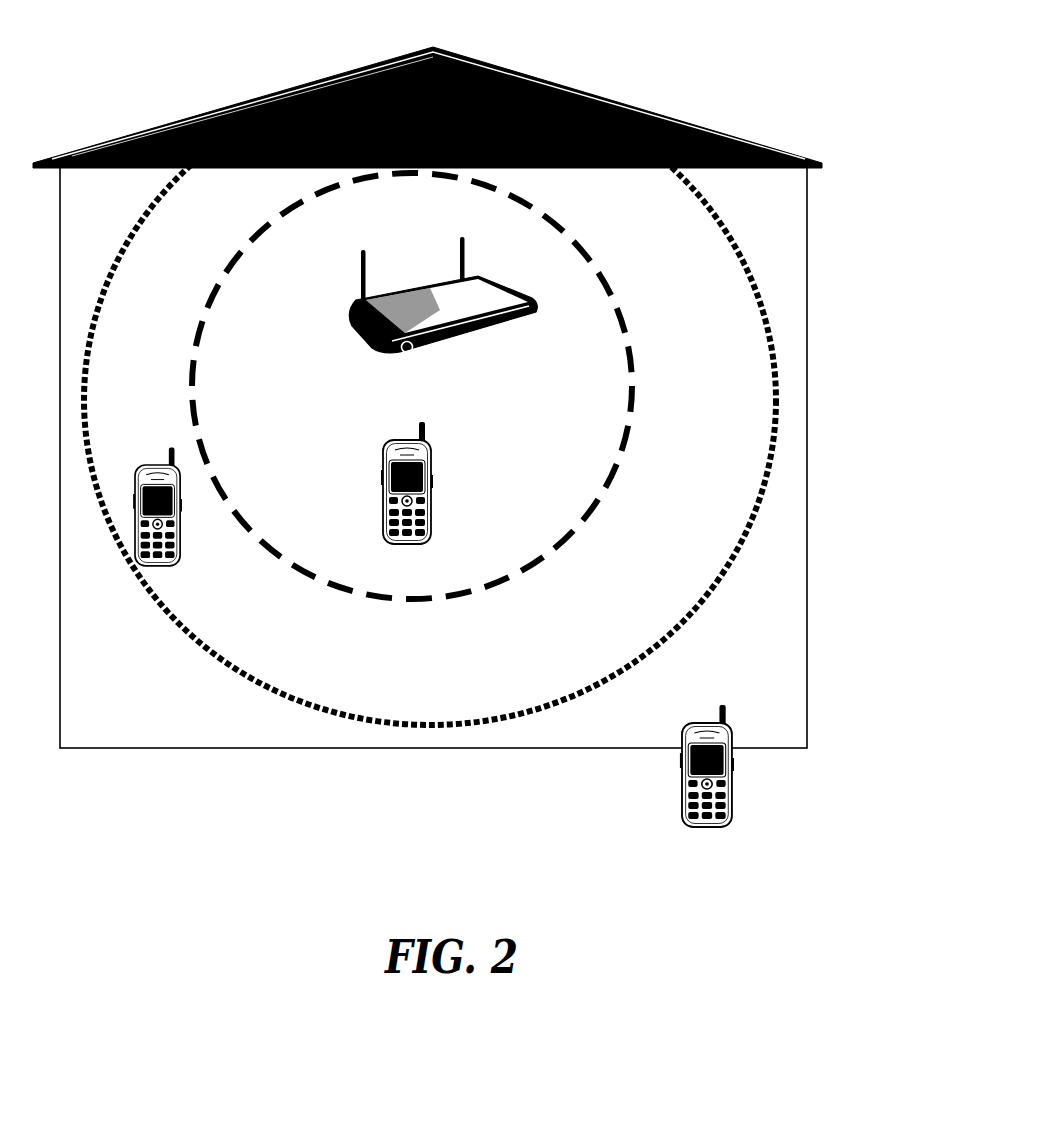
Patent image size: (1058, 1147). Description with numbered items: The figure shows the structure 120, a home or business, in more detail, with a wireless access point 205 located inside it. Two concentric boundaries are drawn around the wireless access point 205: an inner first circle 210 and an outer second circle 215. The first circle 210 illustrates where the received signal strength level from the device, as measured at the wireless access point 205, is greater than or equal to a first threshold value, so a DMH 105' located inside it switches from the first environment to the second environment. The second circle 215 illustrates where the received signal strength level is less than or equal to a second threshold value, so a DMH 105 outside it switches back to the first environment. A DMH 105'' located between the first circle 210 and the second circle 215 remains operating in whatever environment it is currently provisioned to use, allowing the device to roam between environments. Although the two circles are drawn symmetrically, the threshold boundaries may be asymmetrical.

The structure 120 is at (592, 97).
The wireless access point 205 is at (353, 328).
The first circle 210 is at (573, 238).
The second circle 215 is at (688, 614).
The DMH 105 is at (660, 772).
The DMH 105' is at (369, 483).
The DMH 105'' is at (202, 537).